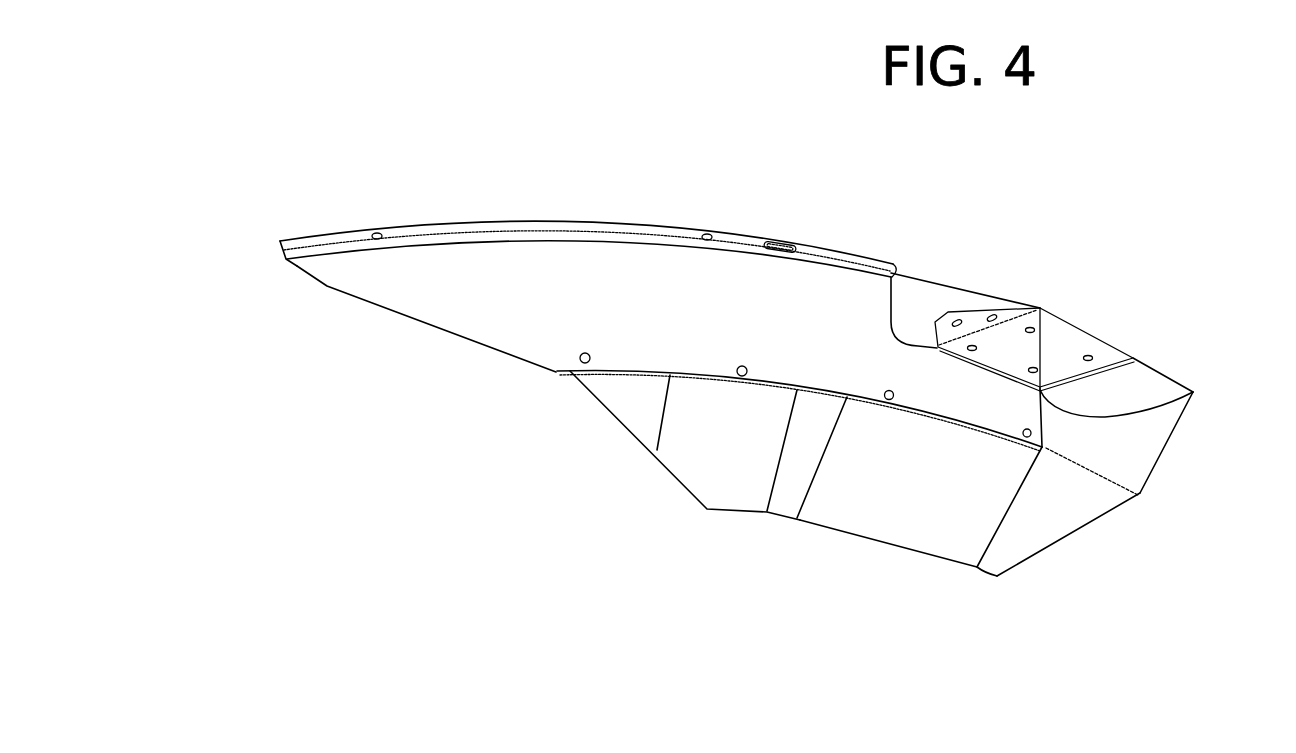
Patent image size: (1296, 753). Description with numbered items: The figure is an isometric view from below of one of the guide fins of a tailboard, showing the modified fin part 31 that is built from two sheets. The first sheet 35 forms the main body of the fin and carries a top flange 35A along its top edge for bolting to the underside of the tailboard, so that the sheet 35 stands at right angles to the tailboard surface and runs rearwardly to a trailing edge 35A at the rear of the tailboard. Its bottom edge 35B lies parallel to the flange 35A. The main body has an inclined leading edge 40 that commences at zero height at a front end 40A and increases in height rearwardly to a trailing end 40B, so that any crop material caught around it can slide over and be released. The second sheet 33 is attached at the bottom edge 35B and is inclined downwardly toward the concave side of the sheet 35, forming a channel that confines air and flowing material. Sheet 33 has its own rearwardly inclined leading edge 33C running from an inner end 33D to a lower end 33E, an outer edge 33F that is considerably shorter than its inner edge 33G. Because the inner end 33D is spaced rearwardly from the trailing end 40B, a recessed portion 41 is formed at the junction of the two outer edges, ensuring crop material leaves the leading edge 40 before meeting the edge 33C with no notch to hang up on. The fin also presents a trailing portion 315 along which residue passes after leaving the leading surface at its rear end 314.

The fin part 31 is at (963, 258).
The second sheet 33 is at (1060, 517).
The leading edge of the second sheet 33C is at (673, 470).
The inner end of the leading edge 33D is at (565, 357).
The lower end of the leading edge 33E is at (707, 509).
The outer edge of the second sheet 33F is at (873, 534).
The inner edge of the second sheet 33G is at (914, 408).
The first sheet 35 is at (1115, 432).
The top flange 35A is at (618, 223).
The bottom edge 35B is at (843, 398).
The leading edge 40 is at (440, 330).
The front end of the leading edge 40A is at (297, 266).
The trailing end of the leading edge 40B is at (553, 373).
The recessed portion 41 is at (563, 367).
The rear end of the leading portion 314 is at (1043, 418).
The trailing portion 315 is at (1071, 433).